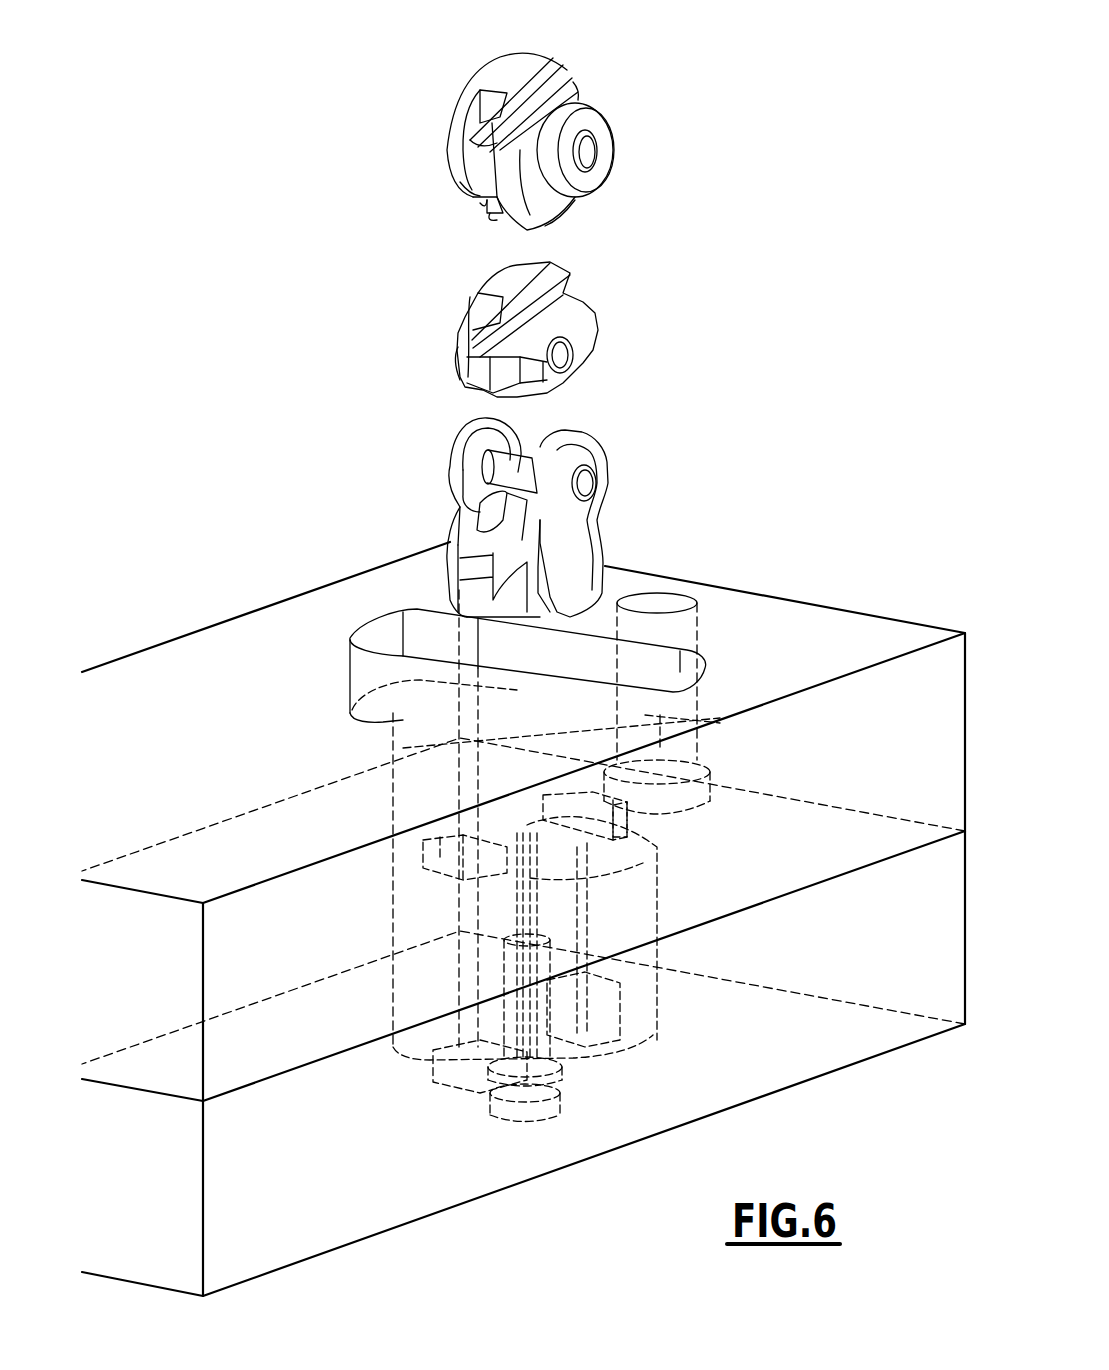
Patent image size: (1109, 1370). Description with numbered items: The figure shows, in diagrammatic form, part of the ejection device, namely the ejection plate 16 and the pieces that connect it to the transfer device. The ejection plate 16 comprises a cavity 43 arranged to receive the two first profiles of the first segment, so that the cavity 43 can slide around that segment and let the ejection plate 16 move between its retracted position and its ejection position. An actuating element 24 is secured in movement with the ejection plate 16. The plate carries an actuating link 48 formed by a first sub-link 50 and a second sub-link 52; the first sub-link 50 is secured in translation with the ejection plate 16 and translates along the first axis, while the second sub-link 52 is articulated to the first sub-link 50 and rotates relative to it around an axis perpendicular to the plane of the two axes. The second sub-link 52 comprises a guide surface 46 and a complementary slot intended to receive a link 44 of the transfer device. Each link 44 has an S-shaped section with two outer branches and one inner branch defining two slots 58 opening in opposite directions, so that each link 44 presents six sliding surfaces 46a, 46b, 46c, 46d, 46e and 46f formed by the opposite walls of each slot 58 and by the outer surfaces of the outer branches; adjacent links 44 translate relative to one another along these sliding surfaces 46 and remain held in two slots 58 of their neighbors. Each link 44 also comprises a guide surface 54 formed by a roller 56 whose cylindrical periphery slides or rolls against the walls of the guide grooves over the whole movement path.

The ejection plate 16 is at (812, 640).
The actuating element 24 is at (520, 517).
The cavity 43 is at (645, 1000).
The link 44 is at (520, 138).
The sliding surface 46 is at (527, 352).
The sliding surface 46a is at (520, 67).
The sliding surface 46b is at (478, 90).
The sliding surface 46c is at (470, 140).
The sliding surface 46d is at (467, 195).
The sliding surface 46e is at (490, 218).
The sliding surface 46f is at (560, 213).
The actuating link 48 is at (583, 330).
The first sub-link 50 is at (470, 520).
The second sub-link 52 is at (465, 350).
The guide surface 54 is at (567, 110).
The roller 56 is at (597, 138).
The slot 58 is at (573, 82).